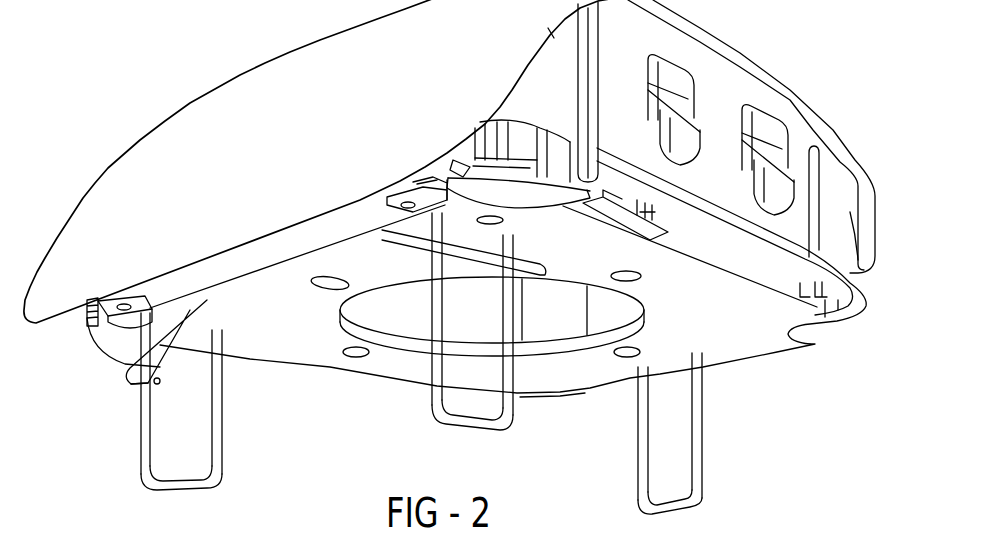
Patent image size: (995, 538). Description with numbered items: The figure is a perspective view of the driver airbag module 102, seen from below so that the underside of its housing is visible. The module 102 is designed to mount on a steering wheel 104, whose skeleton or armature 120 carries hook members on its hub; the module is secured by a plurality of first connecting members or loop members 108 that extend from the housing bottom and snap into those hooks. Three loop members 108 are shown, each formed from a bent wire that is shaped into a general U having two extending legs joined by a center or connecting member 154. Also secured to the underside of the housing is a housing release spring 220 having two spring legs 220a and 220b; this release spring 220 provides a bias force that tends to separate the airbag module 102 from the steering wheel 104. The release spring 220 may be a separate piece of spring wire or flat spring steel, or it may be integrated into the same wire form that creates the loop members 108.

The driver airbag module 102 is at (805, 87).
The steering wheel 104 is at (293, 320).
The loop member 108 is at (197, 407).
The connecting member 154 is at (153, 482).
The armature 120 is at (401, 384).
The housing release spring 220 is at (121, 385).
The spring leg 220a is at (128, 362).
The spring leg 220b is at (140, 388).